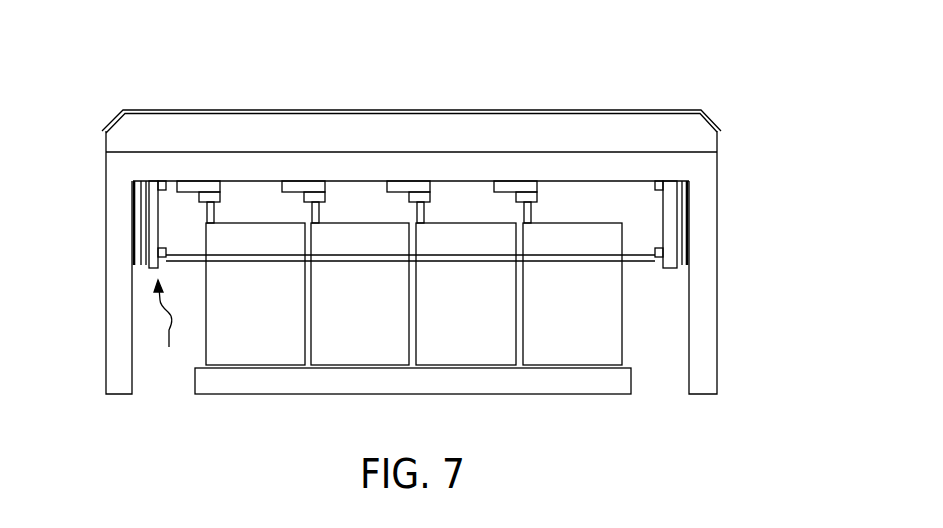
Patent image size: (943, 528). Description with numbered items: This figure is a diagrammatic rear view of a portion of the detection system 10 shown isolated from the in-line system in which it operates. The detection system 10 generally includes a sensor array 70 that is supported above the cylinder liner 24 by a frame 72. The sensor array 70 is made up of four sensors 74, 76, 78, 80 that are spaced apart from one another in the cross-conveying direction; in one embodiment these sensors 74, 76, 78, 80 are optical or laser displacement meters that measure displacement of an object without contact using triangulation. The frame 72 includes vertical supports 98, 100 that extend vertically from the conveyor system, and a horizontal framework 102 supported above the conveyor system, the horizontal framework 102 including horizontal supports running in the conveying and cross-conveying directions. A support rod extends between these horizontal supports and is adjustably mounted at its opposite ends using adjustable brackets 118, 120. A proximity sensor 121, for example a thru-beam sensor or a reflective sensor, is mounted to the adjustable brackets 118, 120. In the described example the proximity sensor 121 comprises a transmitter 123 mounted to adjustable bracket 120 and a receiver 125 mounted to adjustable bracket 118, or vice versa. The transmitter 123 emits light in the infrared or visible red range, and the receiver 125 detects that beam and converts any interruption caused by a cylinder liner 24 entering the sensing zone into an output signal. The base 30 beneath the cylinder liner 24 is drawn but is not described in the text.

The detection system 10 is at (760, 110).
The cylinder liner 24 is at (455, 353).
The base plate 30 is at (578, 394).
The sensor array 70 is at (540, 210).
The frame 72 is at (140, 262).
The sensor 74 is at (188, 183).
The sensor 76 is at (294, 183).
The sensor 78 is at (398, 183).
The sensor 80 is at (505, 183).
The vertical support 98 is at (108, 237).
The vertical support 100 is at (708, 292).
The horizontal framework 102 is at (665, 110).
The adjustable bracket 118 is at (152, 200).
The adjustable bracket 120 is at (668, 200).
The proximity sensor 121 is at (176, 329).
The transmitter 123 is at (178, 254).
The receiver 125 is at (645, 254).